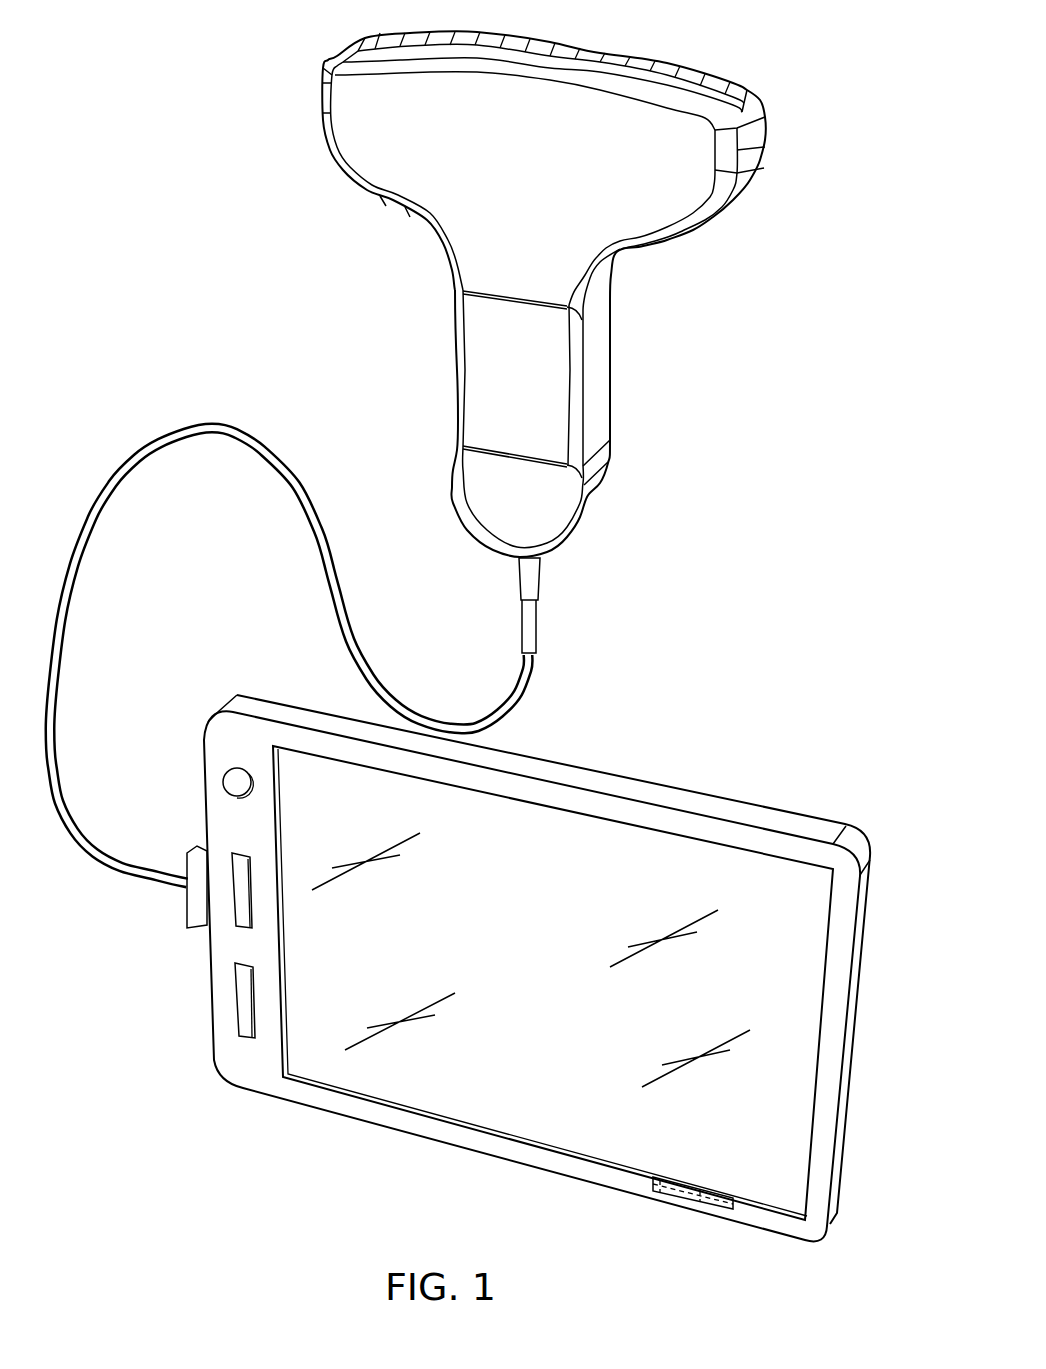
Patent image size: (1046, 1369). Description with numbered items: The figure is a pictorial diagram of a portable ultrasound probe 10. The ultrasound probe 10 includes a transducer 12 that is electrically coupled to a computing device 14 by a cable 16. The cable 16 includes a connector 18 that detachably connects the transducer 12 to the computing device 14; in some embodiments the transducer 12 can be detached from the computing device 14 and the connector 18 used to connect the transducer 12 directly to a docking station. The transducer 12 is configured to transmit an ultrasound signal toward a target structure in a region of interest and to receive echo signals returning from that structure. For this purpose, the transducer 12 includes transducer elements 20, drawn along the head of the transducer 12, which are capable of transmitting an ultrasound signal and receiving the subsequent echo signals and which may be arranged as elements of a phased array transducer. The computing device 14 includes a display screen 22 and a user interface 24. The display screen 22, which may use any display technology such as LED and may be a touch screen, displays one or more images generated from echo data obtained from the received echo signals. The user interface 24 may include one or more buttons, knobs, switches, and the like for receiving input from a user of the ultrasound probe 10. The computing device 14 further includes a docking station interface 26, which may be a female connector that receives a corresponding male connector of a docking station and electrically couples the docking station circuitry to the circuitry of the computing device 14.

The ultrasound probe 10 is at (876, 239).
The transducer 12 is at (597, 342).
The computing device 14 is at (718, 808).
The cable 16 is at (243, 428).
The connector 18 is at (187, 903).
The transducer elements 20 is at (632, 58).
The display screen 22 is at (546, 987).
The user interface 24 is at (243, 1003).
The docking station interface 26 is at (684, 1200).